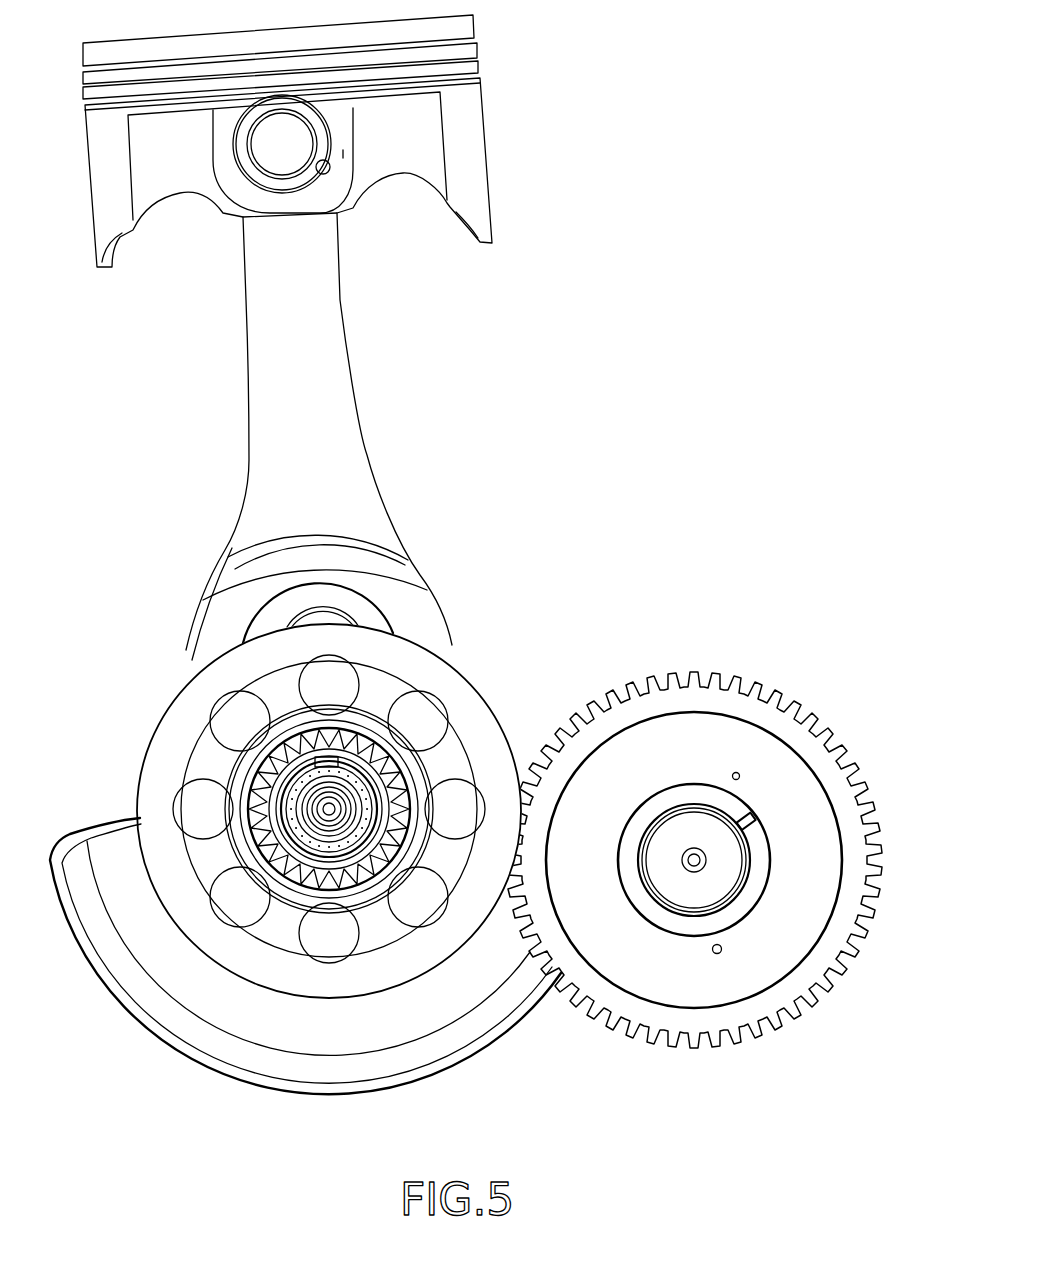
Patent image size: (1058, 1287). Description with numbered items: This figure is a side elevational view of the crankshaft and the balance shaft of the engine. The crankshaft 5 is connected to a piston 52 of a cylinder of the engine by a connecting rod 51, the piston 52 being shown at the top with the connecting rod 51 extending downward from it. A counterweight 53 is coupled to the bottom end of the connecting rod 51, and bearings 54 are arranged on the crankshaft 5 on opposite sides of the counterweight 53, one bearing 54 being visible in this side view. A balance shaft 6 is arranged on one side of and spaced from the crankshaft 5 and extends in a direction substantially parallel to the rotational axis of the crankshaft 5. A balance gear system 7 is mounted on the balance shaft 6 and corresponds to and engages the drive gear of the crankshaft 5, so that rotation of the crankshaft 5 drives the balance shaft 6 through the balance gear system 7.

The crankshaft 5 is at (335, 554).
The connecting rod 51 is at (332, 357).
The piston 52 is at (468, 148).
The counterweight 53 is at (130, 973).
The bearings 54 is at (182, 717).
The balance shaft 6 is at (702, 893).
The balance gear system 7 is at (694, 856).